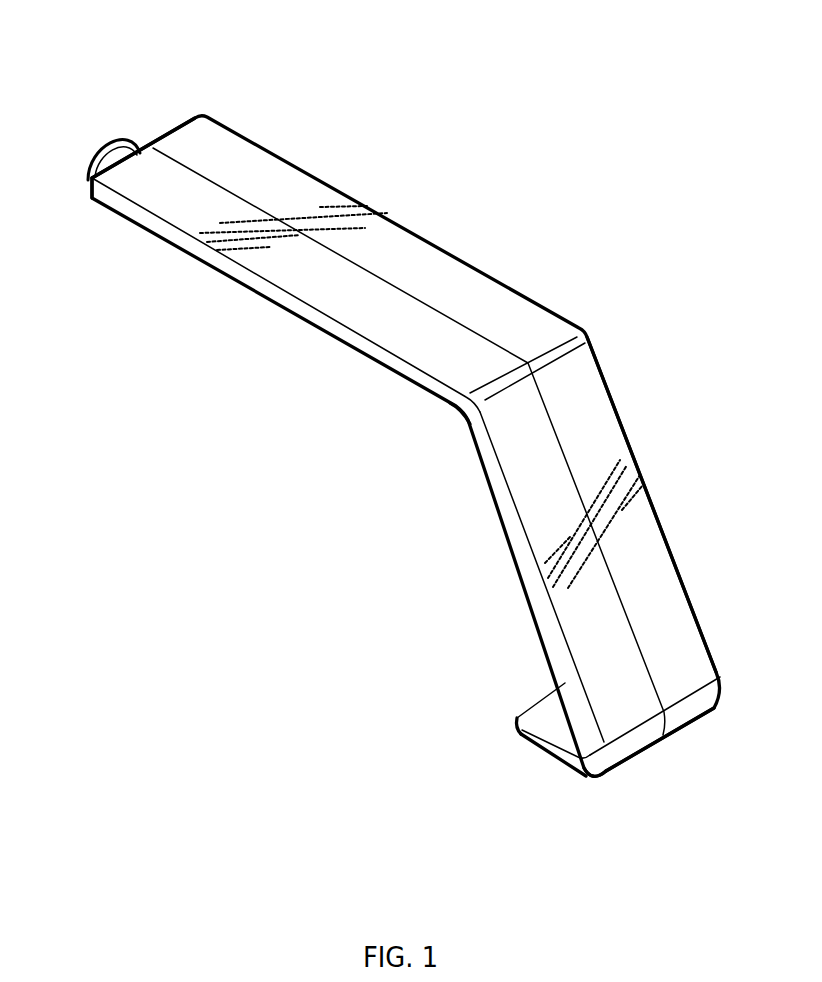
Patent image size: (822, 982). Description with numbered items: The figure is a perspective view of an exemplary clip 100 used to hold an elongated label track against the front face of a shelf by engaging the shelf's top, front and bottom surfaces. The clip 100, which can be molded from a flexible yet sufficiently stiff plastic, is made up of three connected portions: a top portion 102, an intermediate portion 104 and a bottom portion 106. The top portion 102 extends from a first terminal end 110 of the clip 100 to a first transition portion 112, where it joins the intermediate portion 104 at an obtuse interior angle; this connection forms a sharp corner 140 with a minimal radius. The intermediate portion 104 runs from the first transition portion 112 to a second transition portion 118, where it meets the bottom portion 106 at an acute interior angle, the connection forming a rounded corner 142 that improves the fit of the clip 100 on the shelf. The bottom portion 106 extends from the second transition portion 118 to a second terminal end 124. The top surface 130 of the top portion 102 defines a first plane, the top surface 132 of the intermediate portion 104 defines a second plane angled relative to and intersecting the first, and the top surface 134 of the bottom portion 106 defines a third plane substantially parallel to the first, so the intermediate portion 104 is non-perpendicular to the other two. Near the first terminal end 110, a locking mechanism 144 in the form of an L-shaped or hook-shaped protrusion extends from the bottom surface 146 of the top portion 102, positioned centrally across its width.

The clip 100 is at (498, 60).
The top portion 102 is at (409, 198).
The intermediate portion 104 is at (697, 550).
The bottom portion 106 is at (512, 763).
The first terminal end 110 is at (150, 117).
The first transition portion 112 is at (573, 345).
The second transition portion 118 is at (675, 713).
The second terminal end 124 is at (517, 718).
The top surface of the top portion 130 is at (468, 280).
The top surface of the intermediate portion 132 is at (615, 457).
The top surface of the bottom portion 134 is at (543, 752).
The sharp corner 140 is at (455, 426).
The rounded corner 142 is at (568, 715).
The locking mechanism 144 is at (98, 122).
The bottom surface 146 is at (248, 278).